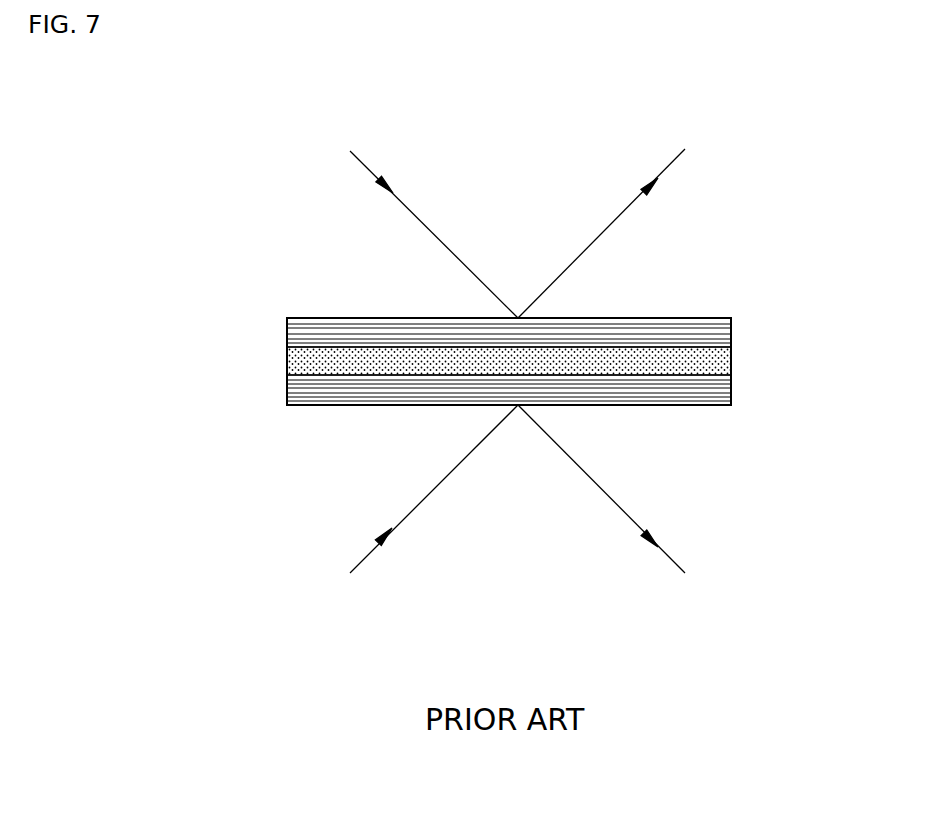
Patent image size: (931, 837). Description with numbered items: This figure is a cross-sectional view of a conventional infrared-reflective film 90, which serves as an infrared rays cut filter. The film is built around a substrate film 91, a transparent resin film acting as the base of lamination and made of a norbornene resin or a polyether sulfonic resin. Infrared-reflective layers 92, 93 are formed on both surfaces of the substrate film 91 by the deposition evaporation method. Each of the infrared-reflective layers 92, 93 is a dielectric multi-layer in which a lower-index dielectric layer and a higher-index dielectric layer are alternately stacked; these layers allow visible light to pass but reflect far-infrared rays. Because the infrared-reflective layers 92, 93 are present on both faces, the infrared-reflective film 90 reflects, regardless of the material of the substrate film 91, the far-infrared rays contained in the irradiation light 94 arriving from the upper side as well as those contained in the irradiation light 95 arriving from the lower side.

The infrared-reflective film 90 is at (555, 314).
The substrate film 91 is at (731, 361).
The infrared-reflective layer 92 is at (731, 330).
The infrared-reflective layer 93 is at (731, 390).
The irradiation light 94 is at (503, 223).
The irradiation light 95 is at (503, 500).